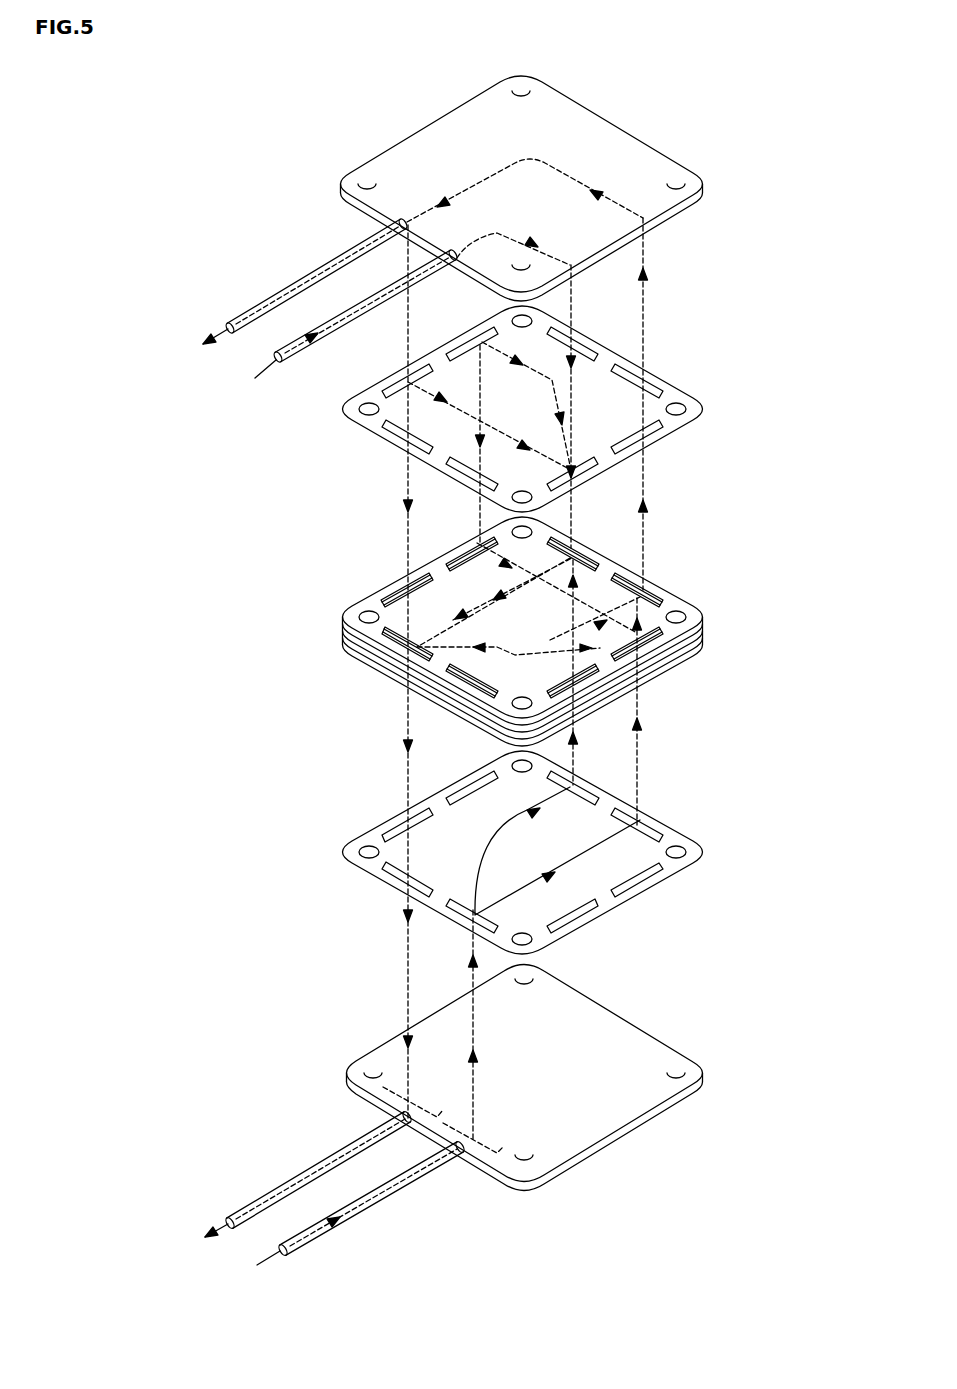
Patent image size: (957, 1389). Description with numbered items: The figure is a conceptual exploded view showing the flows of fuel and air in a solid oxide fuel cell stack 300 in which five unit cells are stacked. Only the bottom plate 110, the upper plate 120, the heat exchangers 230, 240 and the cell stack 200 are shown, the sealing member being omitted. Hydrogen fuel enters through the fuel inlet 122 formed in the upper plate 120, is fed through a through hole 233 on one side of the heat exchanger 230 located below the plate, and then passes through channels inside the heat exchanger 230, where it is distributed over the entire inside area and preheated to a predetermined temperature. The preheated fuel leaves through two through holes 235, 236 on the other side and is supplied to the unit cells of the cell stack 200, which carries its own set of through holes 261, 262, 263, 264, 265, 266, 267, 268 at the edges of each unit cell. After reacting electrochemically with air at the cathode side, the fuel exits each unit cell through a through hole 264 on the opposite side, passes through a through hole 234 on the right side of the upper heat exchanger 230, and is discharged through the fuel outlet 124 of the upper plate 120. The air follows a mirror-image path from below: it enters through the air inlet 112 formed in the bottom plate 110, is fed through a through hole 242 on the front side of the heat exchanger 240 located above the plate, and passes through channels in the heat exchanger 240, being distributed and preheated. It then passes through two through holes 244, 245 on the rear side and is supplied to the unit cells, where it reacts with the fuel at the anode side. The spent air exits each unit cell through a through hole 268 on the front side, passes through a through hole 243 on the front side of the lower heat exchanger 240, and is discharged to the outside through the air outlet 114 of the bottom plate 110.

The solid oxide fuel cell stack 300 is at (352, 104).
The upper plate 120 is at (648, 160).
The fuel outlet 124 is at (318, 265).
The fuel inlet 122 is at (310, 360).
The heat exchanger 230 is at (546, 406).
The through hole 233 is at (598, 468).
The through hole 234 is at (680, 428).
The through hole 235 is at (415, 365).
The through hole 236 is at (468, 332).
The cell stack 200 is at (540, 627).
The manifold opening 261 is at (395, 590).
The manifold opening 262 is at (468, 548).
The manifold opening 263 is at (603, 688).
The through hole 264 is at (677, 650).
The manifold opening 265 is at (677, 590).
The manifold opening 266 is at (607, 545).
The manifold opening 267 is at (440, 690).
The through hole 268 is at (370, 662).
The heat exchanger 240 is at (550, 854).
The through hole 242 is at (452, 910).
The through hole 243 is at (392, 873).
The through hole 244 is at (650, 830).
The through hole 245 is at (597, 787).
The bottom plate 110 is at (647, 1042).
The air outlet 114 is at (343, 1153).
The air inlet 112 is at (370, 1207).